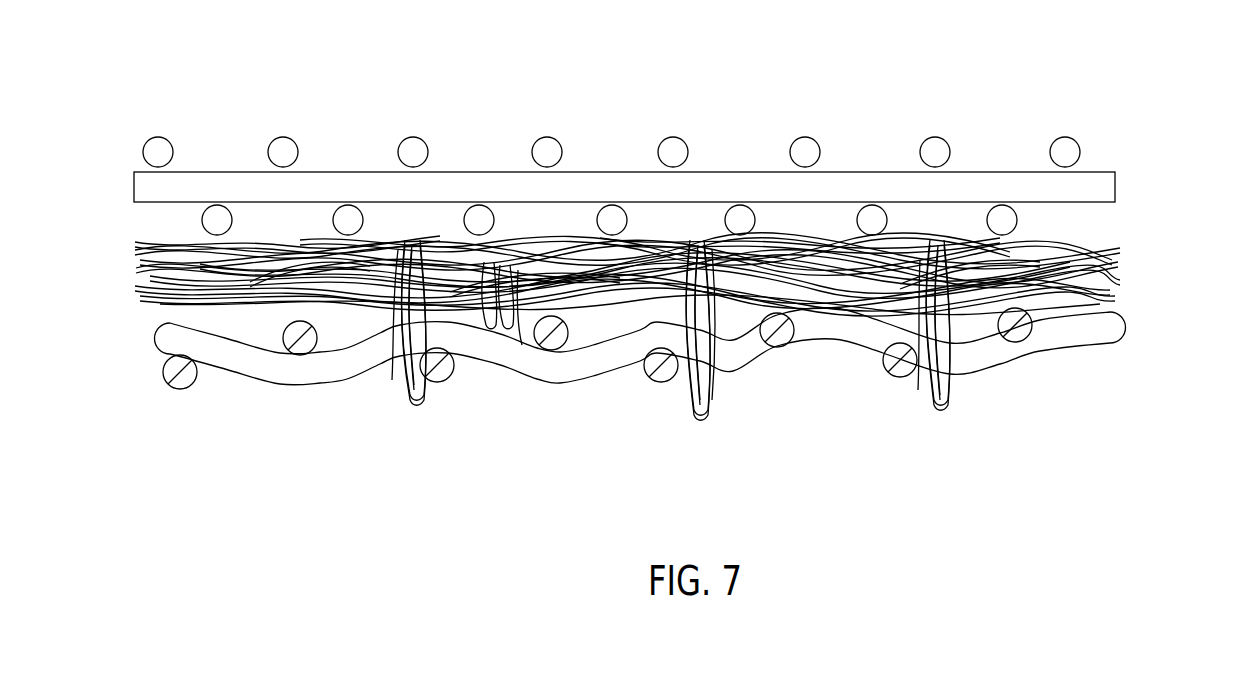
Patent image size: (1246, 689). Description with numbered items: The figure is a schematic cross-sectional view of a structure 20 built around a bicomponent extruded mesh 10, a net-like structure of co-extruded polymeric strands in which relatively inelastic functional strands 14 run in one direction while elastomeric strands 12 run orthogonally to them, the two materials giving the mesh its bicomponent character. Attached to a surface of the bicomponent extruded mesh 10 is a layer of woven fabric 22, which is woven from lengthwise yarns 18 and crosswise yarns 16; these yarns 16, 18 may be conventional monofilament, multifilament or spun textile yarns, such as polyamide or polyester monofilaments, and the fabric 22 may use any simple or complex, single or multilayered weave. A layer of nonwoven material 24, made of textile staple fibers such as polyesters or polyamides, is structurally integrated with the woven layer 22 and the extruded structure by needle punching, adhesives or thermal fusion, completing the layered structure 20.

The bicomponent extruded mesh 10 is at (1155, 135).
The strands 12 is at (220, 171).
The functional strands 14 is at (920, 148).
The crosswise yarns 16 is at (438, 382).
The lengthwise yarns 18 is at (237, 357).
The structure 20 is at (808, 432).
The woven fabric 22 is at (1155, 300).
The nonwoven material 24 is at (1155, 240).